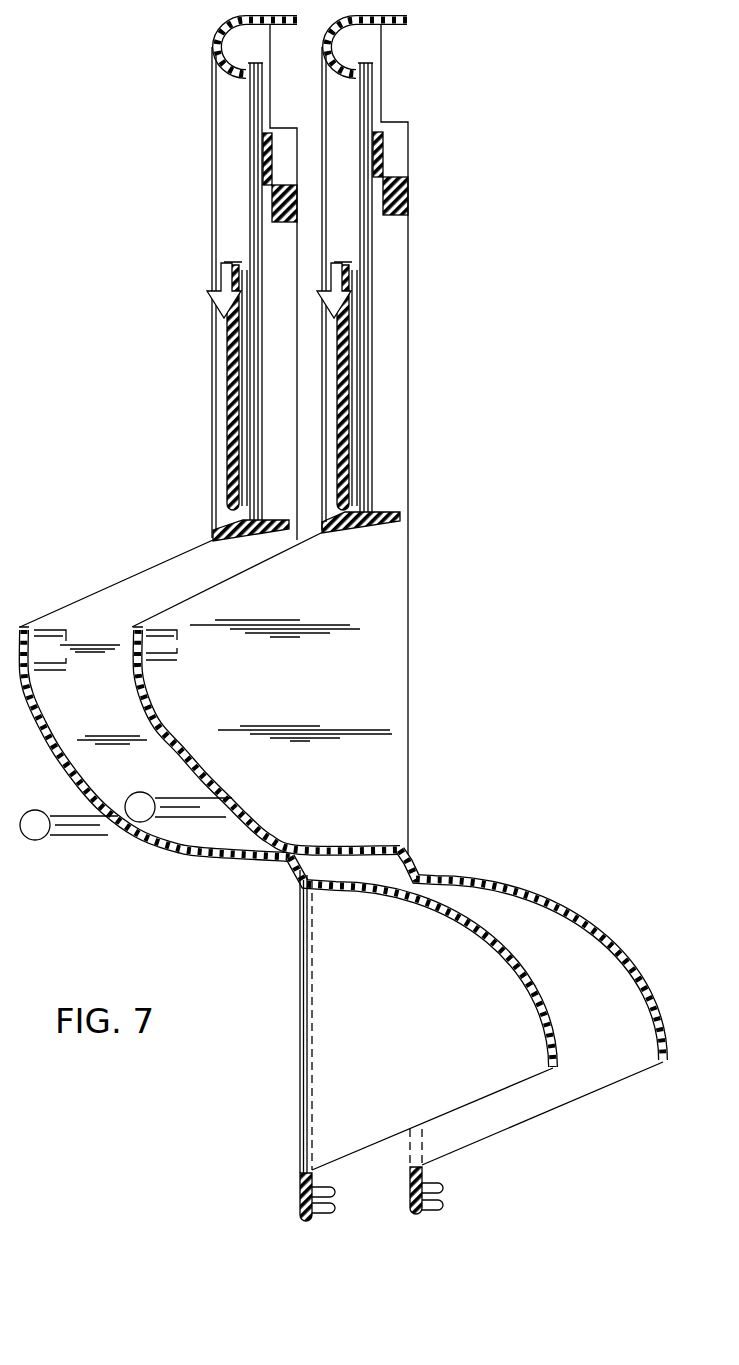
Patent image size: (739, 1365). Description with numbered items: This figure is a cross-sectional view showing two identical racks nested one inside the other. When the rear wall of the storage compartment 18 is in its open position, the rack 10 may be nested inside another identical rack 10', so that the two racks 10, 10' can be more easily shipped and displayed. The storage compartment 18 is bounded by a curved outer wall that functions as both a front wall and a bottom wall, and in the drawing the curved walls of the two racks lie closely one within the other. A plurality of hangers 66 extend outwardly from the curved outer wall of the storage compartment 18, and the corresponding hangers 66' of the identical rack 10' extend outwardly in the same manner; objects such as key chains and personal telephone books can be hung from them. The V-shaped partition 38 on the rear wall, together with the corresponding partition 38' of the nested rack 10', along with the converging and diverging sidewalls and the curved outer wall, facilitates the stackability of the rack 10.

The rack 10 is at (418, 280).
The identical rack 10' is at (215, 280).
The storage compartment 18 is at (383, 630).
The V-shaped partition 38 is at (531, 1026).
The V-shaped partition of the identical rack 38' is at (389, 1039).
The hanger 66 is at (167, 786).
The hanger of the identical rack 66' is at (60, 803).